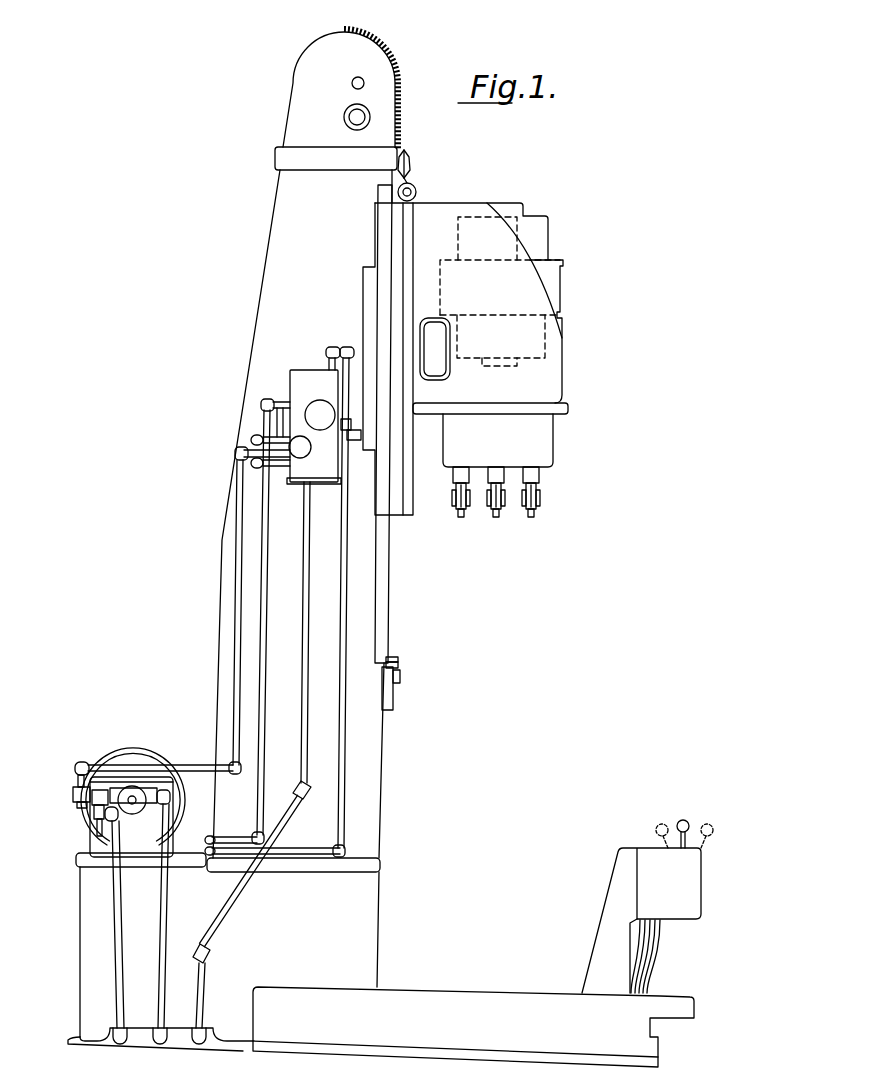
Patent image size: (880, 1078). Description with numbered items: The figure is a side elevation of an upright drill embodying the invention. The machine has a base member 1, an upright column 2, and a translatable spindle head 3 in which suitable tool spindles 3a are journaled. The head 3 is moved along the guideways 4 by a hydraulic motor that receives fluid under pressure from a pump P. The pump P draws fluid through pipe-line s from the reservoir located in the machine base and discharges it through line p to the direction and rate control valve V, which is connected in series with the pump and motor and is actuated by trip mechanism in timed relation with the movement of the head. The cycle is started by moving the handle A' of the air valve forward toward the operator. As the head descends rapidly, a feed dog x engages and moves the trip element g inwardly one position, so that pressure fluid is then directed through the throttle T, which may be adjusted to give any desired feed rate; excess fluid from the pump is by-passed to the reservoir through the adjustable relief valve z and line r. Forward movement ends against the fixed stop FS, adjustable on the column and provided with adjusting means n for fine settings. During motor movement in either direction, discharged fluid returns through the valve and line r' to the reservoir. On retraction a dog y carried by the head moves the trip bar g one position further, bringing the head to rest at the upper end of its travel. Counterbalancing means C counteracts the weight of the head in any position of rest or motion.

The base member 1 is at (381, 996).
The upright column 2 is at (371, 780).
The spindle head 3 is at (555, 368).
The tool spindles 3a is at (520, 525).
The guideways 4 is at (390, 597).
The counterbalancing means C is at (410, 78).
The direction and rate control valve V is at (297, 378).
The throttle T is at (300, 451).
The feed dog x is at (353, 355).
The trip element g is at (347, 422).
The dog y is at (361, 435).
The line p is at (233, 624).
The adjusting means n is at (400, 660).
The fixed stop FS is at (400, 683).
The line r' is at (260, 755).
The pump P is at (128, 780).
The adjustable relief valve z is at (93, 828).
The line r is at (105, 917).
The pipe-line s is at (165, 911).
The handle A' is at (647, 889).